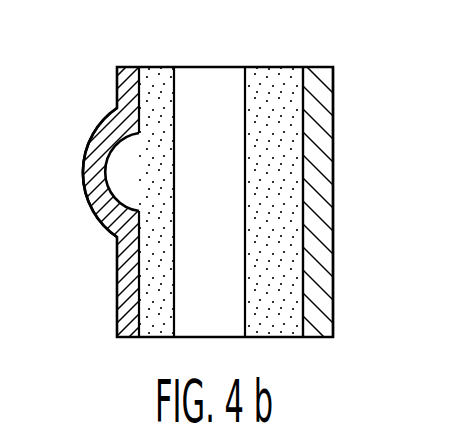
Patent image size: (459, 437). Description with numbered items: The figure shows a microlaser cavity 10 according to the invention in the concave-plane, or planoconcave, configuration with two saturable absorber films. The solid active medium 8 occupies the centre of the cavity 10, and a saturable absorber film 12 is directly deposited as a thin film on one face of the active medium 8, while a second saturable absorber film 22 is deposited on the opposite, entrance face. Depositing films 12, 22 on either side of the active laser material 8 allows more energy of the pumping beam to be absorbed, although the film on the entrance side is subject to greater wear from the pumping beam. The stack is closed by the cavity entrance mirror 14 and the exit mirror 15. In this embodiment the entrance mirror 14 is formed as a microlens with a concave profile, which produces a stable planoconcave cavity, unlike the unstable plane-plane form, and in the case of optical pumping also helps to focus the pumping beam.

The active medium 8 is at (228, 80).
The cavity 10 is at (95, 246).
The saturable absorber film 12 is at (283, 80).
The entrance mirror 14 is at (108, 97).
The exit mirror 15 is at (340, 114).
The second saturable absorber film 22 is at (157, 77).